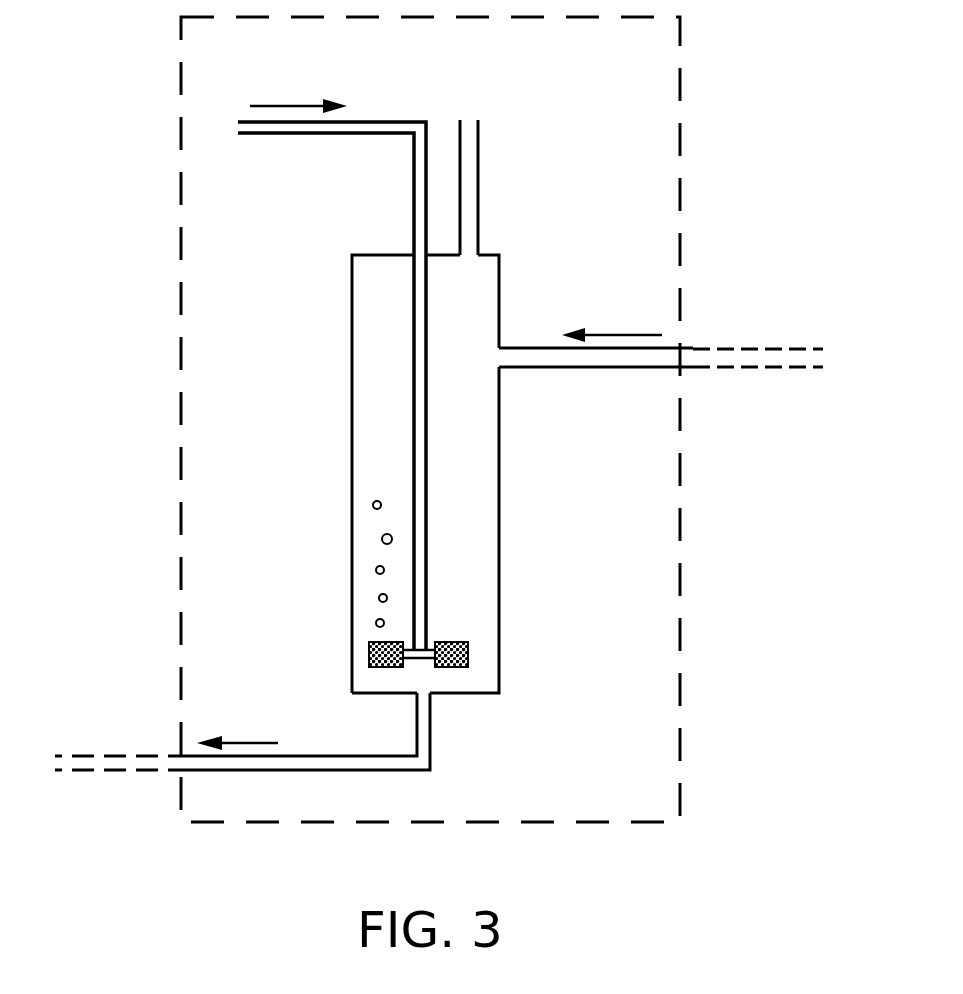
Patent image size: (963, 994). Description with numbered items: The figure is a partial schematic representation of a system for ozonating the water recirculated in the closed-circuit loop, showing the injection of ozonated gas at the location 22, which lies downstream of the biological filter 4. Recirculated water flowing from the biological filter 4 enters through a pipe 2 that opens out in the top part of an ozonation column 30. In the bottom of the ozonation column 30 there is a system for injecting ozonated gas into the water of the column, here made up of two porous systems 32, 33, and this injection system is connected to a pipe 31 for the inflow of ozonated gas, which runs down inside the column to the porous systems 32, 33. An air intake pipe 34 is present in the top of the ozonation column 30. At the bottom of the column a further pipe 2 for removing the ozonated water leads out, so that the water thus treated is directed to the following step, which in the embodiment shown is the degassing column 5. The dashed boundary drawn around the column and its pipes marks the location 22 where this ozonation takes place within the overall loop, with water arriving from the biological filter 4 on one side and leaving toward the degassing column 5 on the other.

The pipe 2 is at (527, 345).
The biological filter 4 is at (850, 372).
The degassing column 5 is at (50, 778).
The location of injection of ozonated gas 22 is at (681, 581).
The ozonation column 30 is at (501, 495).
The pipe for the inflow of ozonated gas 31 is at (302, 134).
The porous system 32 is at (457, 640).
The porous system 33 is at (369, 651).
The air intake pipe 34 is at (480, 186).